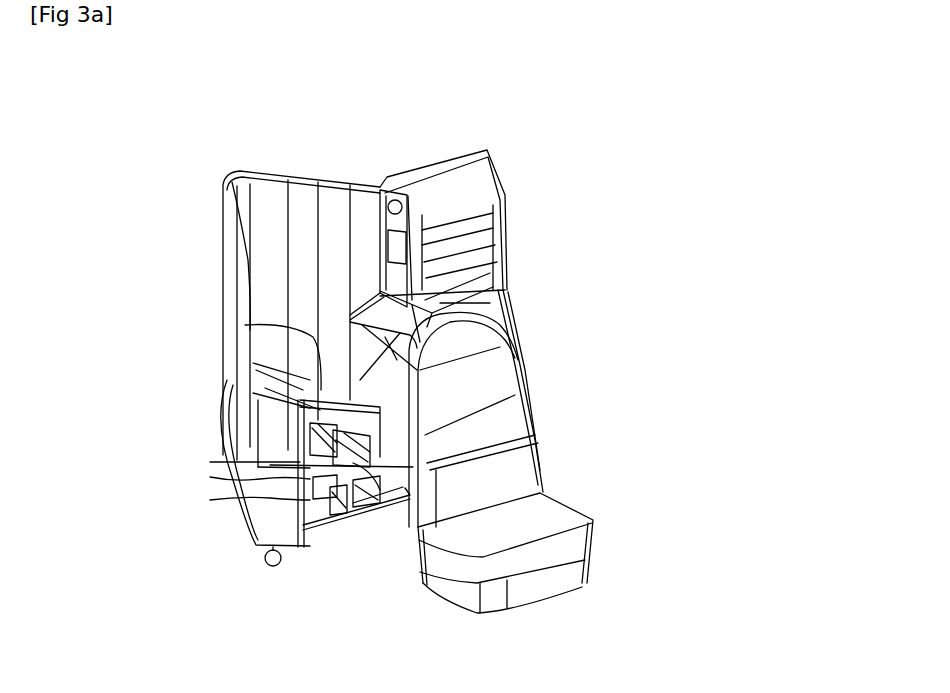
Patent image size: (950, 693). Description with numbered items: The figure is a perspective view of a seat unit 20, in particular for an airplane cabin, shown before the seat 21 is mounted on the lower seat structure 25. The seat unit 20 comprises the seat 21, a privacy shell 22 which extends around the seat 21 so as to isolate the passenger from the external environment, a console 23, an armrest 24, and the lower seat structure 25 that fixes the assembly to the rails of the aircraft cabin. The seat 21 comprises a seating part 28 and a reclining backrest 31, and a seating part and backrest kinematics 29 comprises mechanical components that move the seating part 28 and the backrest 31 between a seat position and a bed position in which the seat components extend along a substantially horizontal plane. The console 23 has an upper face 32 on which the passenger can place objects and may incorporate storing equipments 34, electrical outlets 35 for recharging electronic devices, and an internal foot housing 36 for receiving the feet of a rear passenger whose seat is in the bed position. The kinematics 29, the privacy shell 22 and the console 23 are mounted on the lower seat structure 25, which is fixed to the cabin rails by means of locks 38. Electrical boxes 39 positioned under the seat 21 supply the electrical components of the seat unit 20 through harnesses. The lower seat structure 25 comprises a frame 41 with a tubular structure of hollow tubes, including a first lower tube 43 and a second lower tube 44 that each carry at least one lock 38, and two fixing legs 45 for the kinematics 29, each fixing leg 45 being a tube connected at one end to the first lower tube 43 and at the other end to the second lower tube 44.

The seat unit 20 is at (194, 157).
The seat 21 is at (543, 435).
The privacy shell 22 is at (303, 200).
The console 23 is at (513, 312).
The armrest 24 is at (265, 390).
The lower seat structure 25 is at (307, 512).
The seating part 28 is at (553, 520).
The seating part and backrest kinematics 29 is at (555, 598).
The reclining backrest 31 is at (497, 387).
The upper face 32 is at (512, 292).
The storing equipments 34 is at (456, 246).
The electrical outlets 35 is at (407, 282).
The internal foot housing 36 is at (504, 292).
The locks 38 is at (313, 563).
The electrical boxes 39 is at (320, 365).
The frame 41 is at (380, 520).
The first lower tube 43 is at (337, 520).
The second lower tube 44 is at (227, 460).
The fixing legs 45 is at (245, 502).